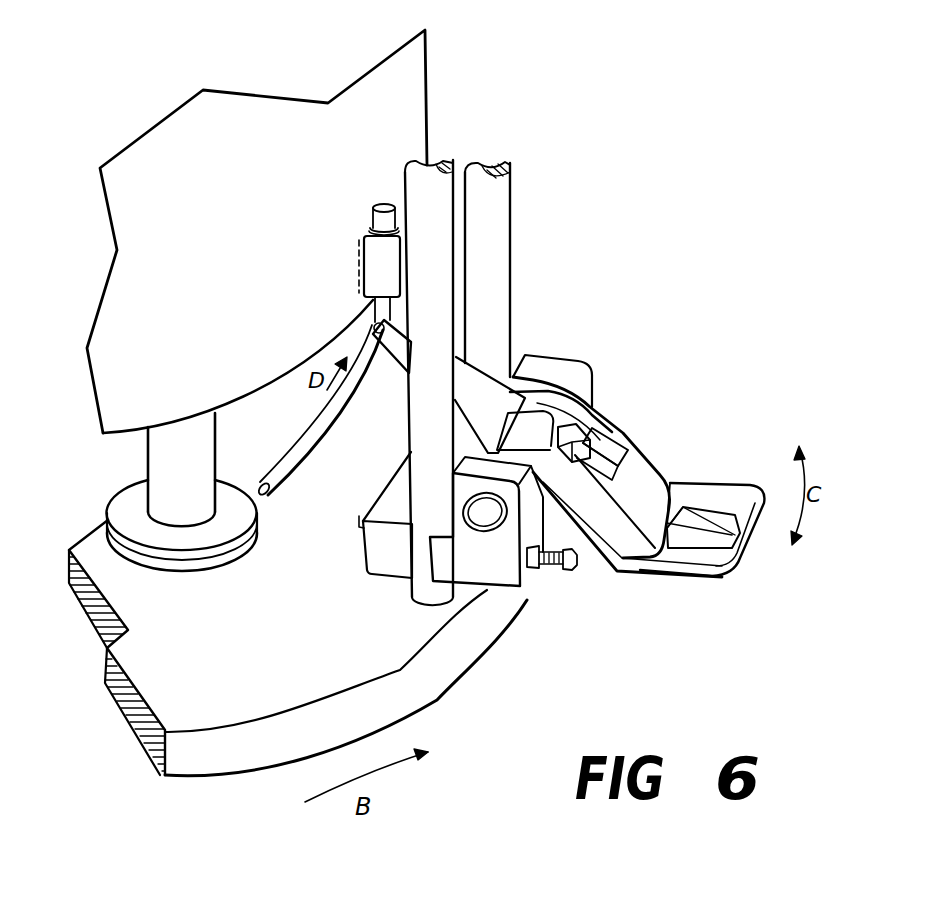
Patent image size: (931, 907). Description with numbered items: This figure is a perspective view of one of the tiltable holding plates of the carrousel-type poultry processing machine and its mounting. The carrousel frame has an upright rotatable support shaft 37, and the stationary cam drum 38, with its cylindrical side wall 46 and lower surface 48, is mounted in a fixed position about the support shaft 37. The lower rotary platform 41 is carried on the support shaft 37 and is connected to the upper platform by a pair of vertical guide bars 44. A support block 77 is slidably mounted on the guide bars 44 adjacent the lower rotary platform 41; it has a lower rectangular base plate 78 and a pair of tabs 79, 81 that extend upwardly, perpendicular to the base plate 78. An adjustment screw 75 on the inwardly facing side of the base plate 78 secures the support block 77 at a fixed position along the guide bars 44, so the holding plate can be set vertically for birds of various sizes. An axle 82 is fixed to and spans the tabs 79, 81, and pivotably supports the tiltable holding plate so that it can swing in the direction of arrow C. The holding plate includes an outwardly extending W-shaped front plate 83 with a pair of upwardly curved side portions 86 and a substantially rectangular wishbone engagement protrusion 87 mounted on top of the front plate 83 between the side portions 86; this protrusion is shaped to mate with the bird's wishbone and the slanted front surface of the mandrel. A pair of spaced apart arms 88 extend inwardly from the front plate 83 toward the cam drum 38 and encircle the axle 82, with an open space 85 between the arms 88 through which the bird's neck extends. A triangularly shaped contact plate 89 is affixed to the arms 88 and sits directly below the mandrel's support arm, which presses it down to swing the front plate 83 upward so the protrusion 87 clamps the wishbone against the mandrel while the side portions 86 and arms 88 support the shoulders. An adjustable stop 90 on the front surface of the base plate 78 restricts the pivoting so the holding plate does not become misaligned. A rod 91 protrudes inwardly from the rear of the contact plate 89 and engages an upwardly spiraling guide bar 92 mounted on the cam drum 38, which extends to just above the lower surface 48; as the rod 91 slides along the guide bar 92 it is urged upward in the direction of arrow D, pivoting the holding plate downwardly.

The support shaft 37 is at (155, 450).
The cam drum 38 is at (163, 128).
The lower rotary platform 41 is at (205, 762).
The vertical guide bars 44 is at (440, 160).
The cylindrical side wall 46 is at (212, 257).
The lower surface 48 is at (246, 372).
The adjustment screw 75 is at (360, 521).
The support block 77 is at (402, 587).
The base plate 78 is at (375, 550).
The tab 79 is at (478, 471).
The tab 81 is at (550, 367).
The axle 82 is at (537, 423).
The front plate 83 is at (640, 576).
The open space 85 is at (570, 438).
The upwardly curved side portions 86 is at (707, 492).
The wishbone engagement protrusion 87 is at (736, 550).
The arms 88 is at (608, 433).
The contact plate 89 is at (502, 412).
The adjustable stop 90 is at (553, 569).
The rod 91 is at (374, 328).
The guide bar 92 is at (302, 436).